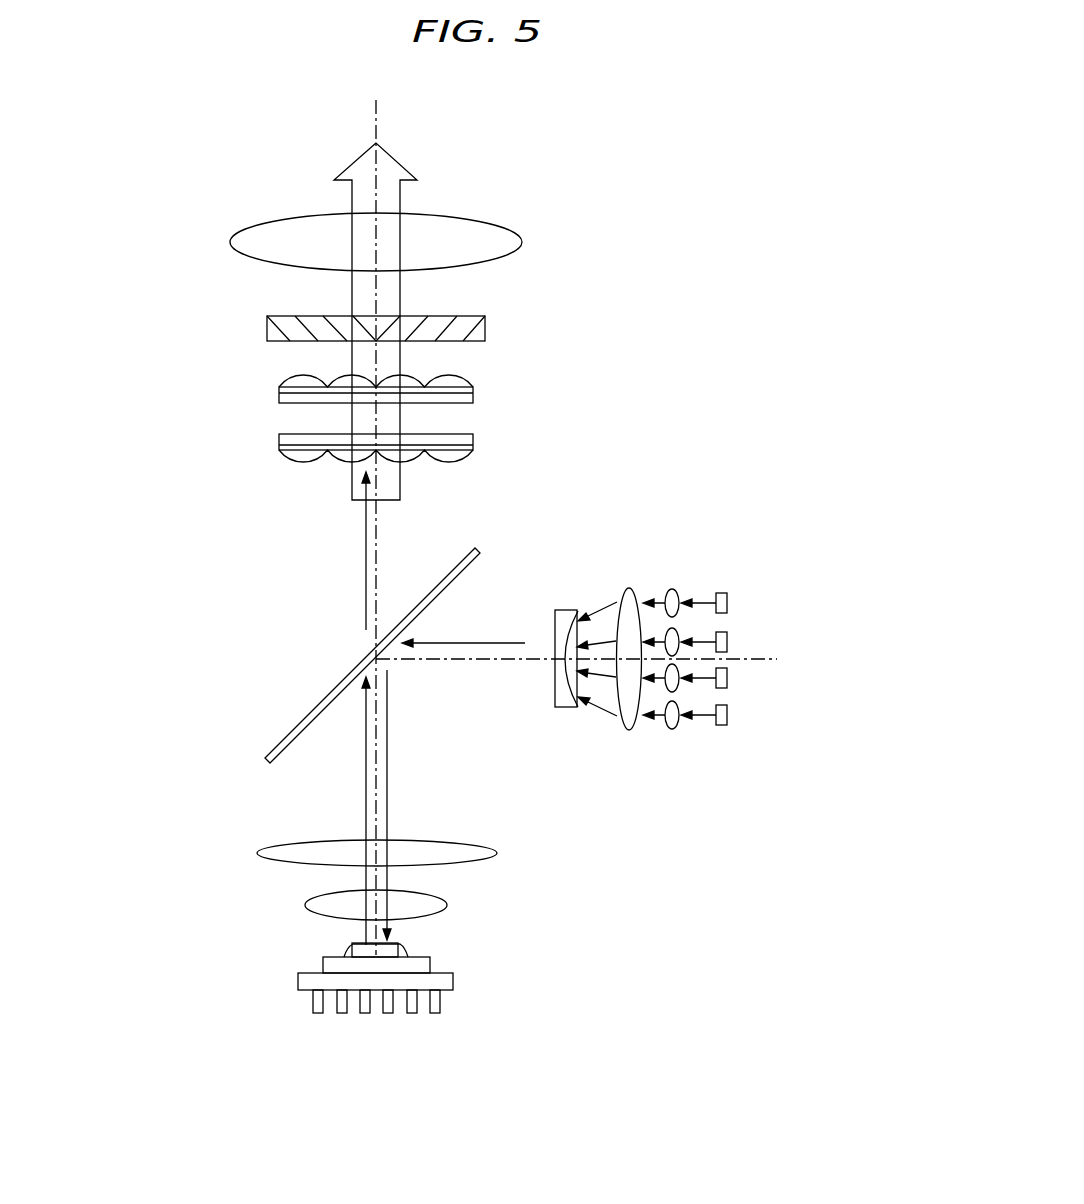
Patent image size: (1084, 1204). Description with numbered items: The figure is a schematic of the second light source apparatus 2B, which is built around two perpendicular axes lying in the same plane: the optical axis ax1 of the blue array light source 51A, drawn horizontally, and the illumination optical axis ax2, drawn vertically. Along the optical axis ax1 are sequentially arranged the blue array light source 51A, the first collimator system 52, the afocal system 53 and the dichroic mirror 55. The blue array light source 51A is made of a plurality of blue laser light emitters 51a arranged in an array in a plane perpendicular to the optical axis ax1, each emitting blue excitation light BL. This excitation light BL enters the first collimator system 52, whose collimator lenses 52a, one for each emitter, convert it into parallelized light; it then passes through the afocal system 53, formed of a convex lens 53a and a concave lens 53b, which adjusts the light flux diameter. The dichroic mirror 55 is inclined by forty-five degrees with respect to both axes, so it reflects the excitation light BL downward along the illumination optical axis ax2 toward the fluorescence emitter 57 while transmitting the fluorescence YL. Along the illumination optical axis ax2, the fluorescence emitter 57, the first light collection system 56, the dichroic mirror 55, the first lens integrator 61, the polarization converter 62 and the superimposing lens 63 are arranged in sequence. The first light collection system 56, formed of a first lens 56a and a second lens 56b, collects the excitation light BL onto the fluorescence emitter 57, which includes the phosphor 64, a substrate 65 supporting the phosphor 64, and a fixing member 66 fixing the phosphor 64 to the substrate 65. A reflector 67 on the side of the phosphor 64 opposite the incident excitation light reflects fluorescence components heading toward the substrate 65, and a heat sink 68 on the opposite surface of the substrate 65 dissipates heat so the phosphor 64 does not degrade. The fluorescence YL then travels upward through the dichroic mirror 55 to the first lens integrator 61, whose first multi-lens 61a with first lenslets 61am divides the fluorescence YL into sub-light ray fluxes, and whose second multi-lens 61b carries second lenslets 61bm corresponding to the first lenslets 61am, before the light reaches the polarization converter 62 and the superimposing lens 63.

The second light source apparatus 2B is at (740, 152).
The illumination optical axis ax2 is at (376, 108).
The optical axis ax1 is at (757, 662).
The fluorescence YL is at (397, 162).
The excitation light BL is at (468, 643).
The superimposing lens 63 is at (500, 223).
The polarization converter 62 is at (485, 333).
The first lens integrator 61 is at (396, 416).
The first multi-lens 61a is at (375, 448).
The second multi-lens 61b is at (375, 390).
The first lenslets 61am is at (295, 460).
The second lenslets 61bm is at (295, 383).
The dichroic mirror 55 is at (292, 726).
The afocal system 53 is at (607, 607).
The convex lens 53a is at (625, 588).
The concave lens 53b is at (565, 610).
The first collimator system 52 is at (670, 650).
The collimator lenses 52a is at (675, 730).
The blue array light source 51A is at (742, 609).
The blue laser light emitters 51a is at (729, 603).
The first light collection system 56 is at (446, 886).
The first lens 56a is at (497, 853).
The second lens 56b is at (447, 905).
The fluorescence emitter 57 is at (392, 990).
The phosphor 64 is at (352, 948).
The substrate 65 is at (325, 966).
The fixing member 66 is at (404, 955).
The reflector 67 is at (385, 960).
The heat sink 68 is at (302, 982).